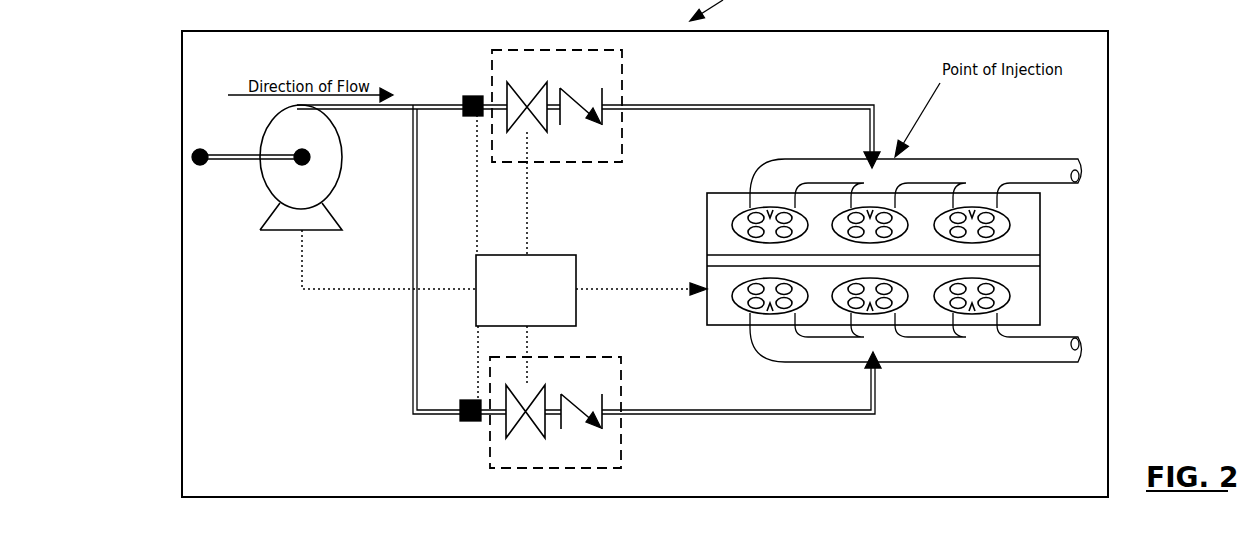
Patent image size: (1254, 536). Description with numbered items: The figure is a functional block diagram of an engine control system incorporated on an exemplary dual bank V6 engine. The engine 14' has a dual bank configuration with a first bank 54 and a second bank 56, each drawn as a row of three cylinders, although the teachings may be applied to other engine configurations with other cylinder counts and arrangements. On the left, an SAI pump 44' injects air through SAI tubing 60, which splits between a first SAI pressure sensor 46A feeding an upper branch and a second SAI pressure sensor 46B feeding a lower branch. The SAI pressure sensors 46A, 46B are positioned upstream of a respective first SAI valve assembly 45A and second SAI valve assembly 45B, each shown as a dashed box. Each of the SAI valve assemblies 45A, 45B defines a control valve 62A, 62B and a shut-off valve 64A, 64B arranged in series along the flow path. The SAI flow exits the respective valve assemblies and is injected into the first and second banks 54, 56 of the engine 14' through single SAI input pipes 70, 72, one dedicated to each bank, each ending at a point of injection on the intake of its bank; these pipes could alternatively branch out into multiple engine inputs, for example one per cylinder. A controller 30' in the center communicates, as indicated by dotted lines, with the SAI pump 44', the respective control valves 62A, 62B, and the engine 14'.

The engine 14' is at (876, 260).
The controller 30' is at (548, 276).
The SAI pump 44' is at (290, 167).
The first SAI valve assembly 45A is at (622, 85).
The second SAI valve assembly 45B is at (622, 390).
The first SAI pressure sensor 46A is at (468, 117).
The second SAI pressure sensor 46B is at (468, 400).
The first bank 54 is at (705, 227).
The second bank 56 is at (706, 312).
The SAI tubing 60 is at (418, 103).
The control valve 62A is at (560, 139).
The control valve 62B is at (547, 446).
The shut-off valve 64A is at (622, 120).
The shut-off valve 64B is at (618, 432).
The SAI input pipe 70 is at (737, 104).
The SAI input pipe 72 is at (800, 417).